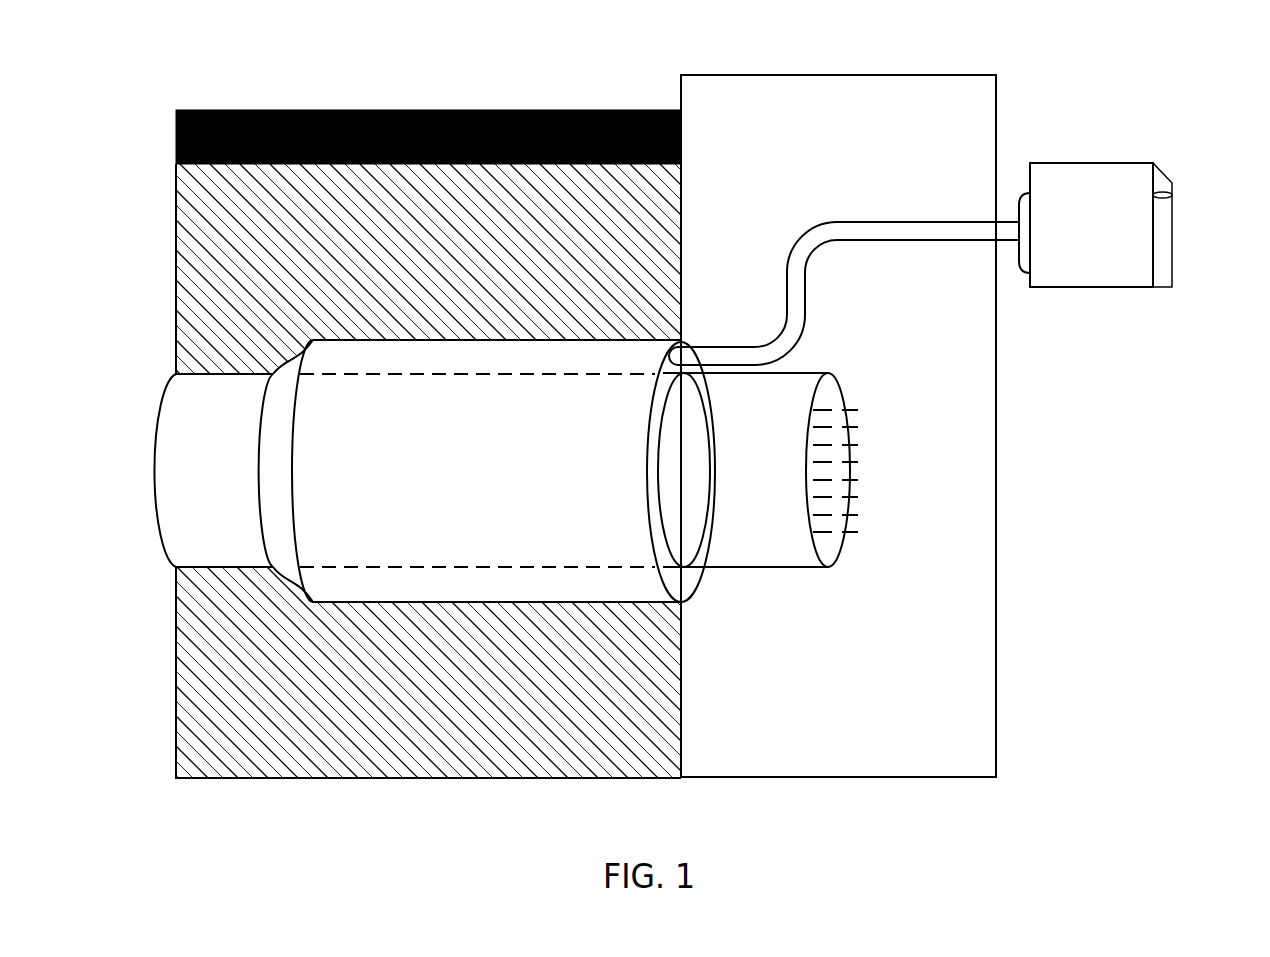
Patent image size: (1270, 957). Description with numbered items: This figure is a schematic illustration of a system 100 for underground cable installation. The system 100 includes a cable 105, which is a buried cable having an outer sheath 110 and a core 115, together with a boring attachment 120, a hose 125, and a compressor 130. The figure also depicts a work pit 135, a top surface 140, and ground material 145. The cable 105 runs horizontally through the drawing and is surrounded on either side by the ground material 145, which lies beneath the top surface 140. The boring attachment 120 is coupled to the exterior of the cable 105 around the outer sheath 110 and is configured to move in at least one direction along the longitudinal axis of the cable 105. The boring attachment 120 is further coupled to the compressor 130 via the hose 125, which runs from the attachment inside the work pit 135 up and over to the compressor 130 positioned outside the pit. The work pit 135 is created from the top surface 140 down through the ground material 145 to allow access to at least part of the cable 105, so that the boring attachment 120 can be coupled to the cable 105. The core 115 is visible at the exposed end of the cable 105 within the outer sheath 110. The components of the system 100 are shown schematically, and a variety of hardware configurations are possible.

The system 100 is at (1106, 838).
The cable 105 is at (910, 368).
The outer sheath 110 is at (782, 373).
The core 115 is at (858, 400).
The boring attachment 120 is at (695, 588).
The hose 125 is at (767, 287).
The compressor 130 is at (1101, 163).
The work pit 135 is at (997, 92).
The top surface 140 is at (176, 140).
The ground material 145 is at (176, 217).